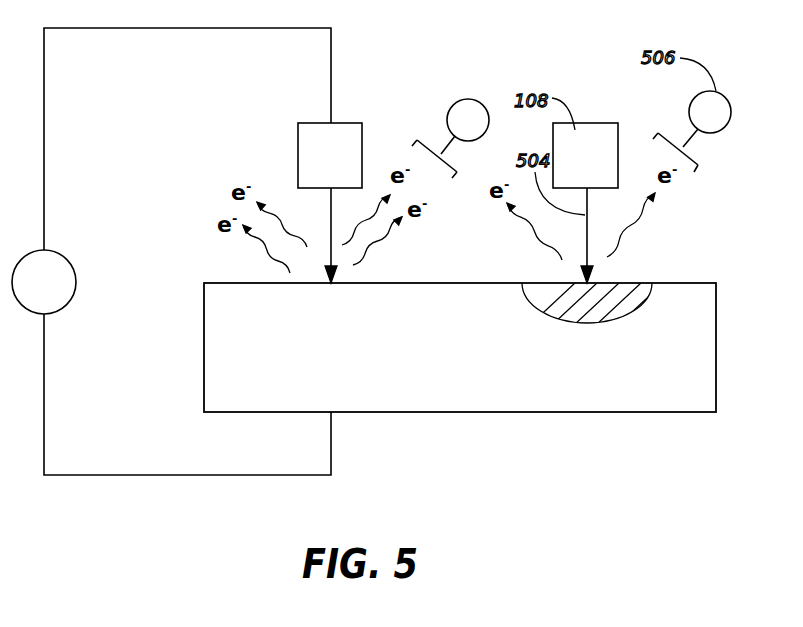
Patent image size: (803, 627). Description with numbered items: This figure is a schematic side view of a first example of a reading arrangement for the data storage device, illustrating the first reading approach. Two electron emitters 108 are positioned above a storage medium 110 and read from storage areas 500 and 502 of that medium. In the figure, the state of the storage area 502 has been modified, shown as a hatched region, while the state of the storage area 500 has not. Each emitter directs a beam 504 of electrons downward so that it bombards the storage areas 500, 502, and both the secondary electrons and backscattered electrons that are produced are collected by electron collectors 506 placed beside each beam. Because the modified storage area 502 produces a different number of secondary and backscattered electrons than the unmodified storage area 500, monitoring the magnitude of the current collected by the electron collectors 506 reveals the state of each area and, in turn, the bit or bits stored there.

The electron emitter 108 is at (315, 130).
The storage medium 110 is at (557, 431).
The storage area 500 is at (362, 283).
The storage area 502 is at (635, 283).
The beam 504 is at (330, 220).
The electron collector 506 is at (470, 99).